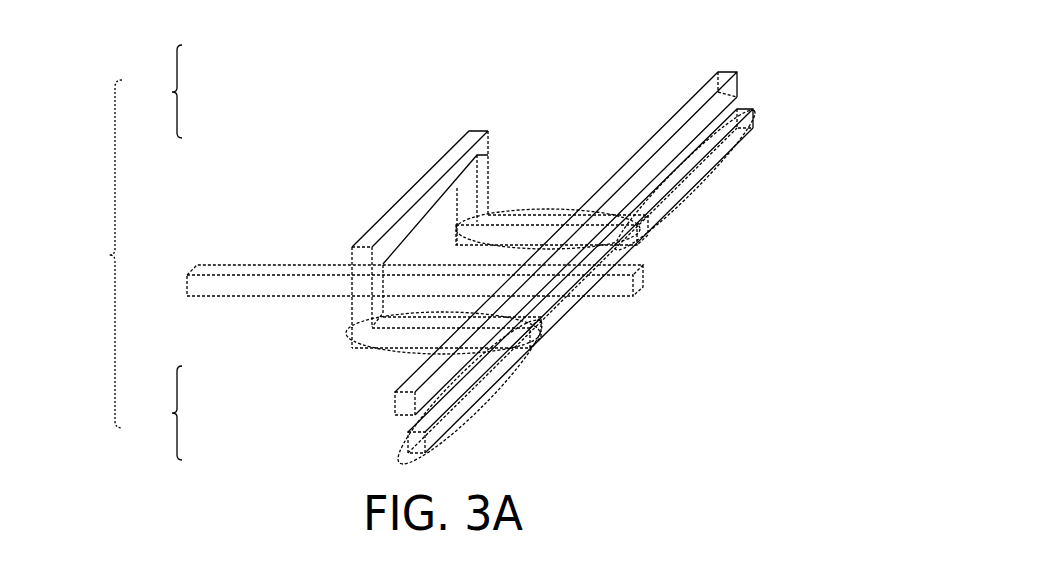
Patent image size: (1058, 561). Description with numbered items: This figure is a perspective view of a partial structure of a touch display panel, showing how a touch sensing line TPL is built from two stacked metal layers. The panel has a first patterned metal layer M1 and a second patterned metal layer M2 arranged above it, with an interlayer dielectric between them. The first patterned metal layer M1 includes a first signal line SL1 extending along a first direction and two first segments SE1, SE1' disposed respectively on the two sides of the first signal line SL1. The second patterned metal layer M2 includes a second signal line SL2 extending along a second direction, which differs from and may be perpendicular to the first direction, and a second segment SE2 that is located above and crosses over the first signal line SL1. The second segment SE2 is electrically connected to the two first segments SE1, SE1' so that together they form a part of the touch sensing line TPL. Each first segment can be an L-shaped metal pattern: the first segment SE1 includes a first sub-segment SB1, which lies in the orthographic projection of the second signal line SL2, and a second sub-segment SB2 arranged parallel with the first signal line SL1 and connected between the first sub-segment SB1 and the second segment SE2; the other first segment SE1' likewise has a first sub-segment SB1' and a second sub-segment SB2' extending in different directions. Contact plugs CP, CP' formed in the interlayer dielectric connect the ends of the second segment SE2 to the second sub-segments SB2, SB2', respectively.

The touch sensing line TPL is at (93, 254).
The first segment SE1 is at (152, 413).
The first segment SE1' is at (152, 91).
The second segment SE2 is at (377, 228).
The first sub-segment SB1 is at (466, 292).
The second sub-segment SB2 is at (458, 243).
The first sub-segment SB1' is at (472, 139).
The second sub-segment SB2' is at (361, 162).
The contact plug CP is at (331, 328).
The contact plug CP' is at (385, 202).
The first signal line SL1 is at (628, 285).
The second signal line SL2 is at (632, 165).
The first patterned metal layer M1 is at (762, 118).
The second patterned metal layer M2 is at (748, 80).